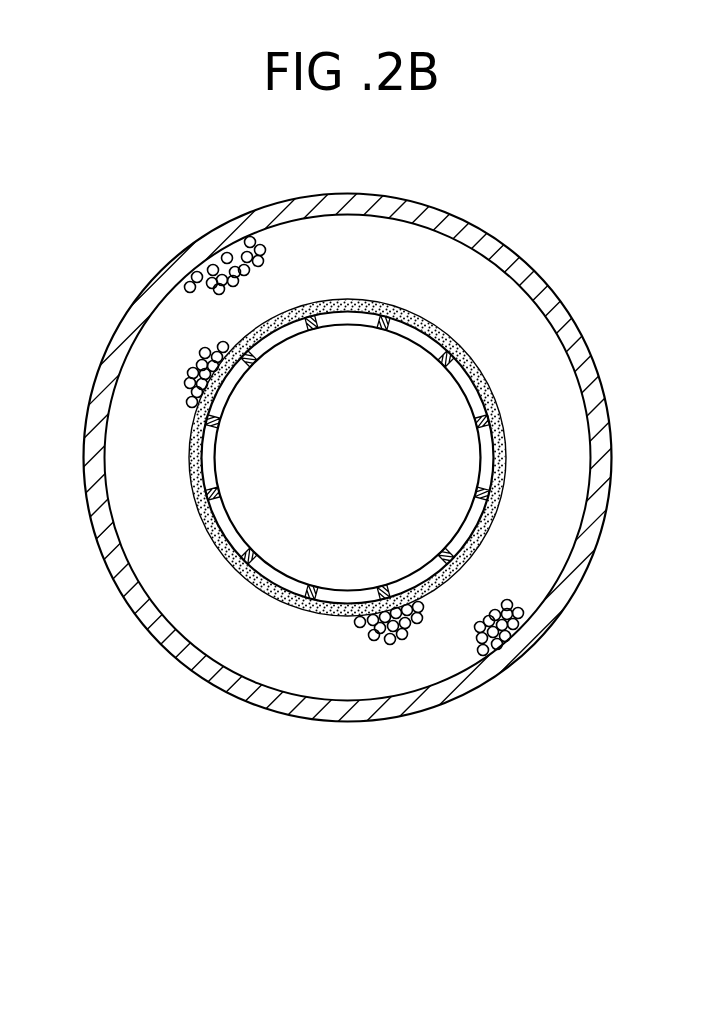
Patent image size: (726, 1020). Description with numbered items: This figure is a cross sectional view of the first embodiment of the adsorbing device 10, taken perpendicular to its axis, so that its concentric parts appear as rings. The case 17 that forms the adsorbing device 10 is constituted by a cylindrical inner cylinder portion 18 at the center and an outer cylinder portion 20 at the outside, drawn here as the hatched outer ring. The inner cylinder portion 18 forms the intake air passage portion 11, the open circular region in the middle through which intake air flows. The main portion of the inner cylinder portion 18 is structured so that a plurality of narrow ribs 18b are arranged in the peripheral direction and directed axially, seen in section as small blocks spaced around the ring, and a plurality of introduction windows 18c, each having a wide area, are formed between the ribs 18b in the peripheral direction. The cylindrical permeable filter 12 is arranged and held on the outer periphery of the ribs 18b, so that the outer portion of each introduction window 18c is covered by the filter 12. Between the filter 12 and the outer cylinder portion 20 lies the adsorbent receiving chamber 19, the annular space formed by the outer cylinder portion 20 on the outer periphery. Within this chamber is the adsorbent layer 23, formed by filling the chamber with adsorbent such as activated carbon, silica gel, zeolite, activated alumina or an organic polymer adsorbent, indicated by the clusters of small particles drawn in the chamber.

The adsorbing device 10 is at (170, 197).
The intake air passage portion 11 is at (366, 557).
The cylindrical permeable filter 12 is at (428, 331).
The case 17 is at (450, 200).
The inner cylinder portion 18 is at (348, 336).
The ribs 18b is at (447, 359).
The introduction windows 18c is at (207, 452).
The adsorbent receiving chamber 19 is at (570, 422).
The outer cylinder portion 20 is at (602, 498).
The adsorbent layer 23 is at (262, 262).